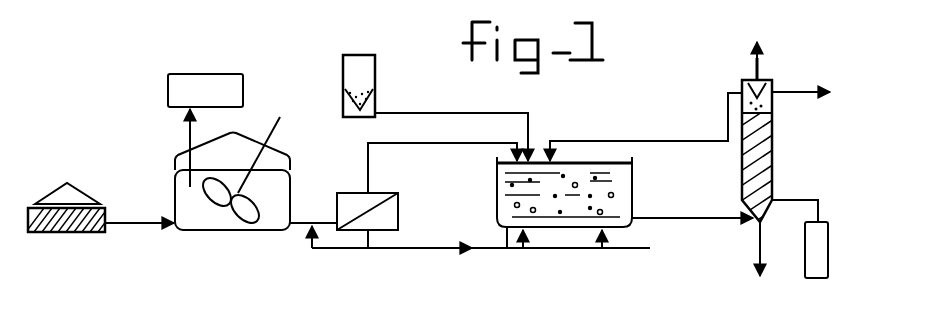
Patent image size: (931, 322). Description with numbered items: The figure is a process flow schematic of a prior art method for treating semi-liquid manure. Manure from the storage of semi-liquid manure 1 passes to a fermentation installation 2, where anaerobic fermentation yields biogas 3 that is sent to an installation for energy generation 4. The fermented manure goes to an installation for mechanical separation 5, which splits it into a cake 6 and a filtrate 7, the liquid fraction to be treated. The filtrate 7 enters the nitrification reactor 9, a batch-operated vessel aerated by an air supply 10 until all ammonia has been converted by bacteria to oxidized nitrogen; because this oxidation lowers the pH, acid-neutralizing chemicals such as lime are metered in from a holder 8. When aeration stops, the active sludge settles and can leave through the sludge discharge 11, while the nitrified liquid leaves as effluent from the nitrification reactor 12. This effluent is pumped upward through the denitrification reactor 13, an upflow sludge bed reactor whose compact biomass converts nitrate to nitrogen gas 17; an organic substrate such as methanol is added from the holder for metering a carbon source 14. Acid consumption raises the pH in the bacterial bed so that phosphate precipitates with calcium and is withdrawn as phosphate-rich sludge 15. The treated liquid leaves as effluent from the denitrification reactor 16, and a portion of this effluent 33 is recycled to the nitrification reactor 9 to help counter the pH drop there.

The storage of semi-liquid manure 1 is at (78, 224).
The fermentation installation 2 is at (227, 218).
The biogas 3 is at (187, 135).
The installation for energy generation 4 is at (192, 90).
The installation for mechanical separation 5 is at (352, 205).
The cake 6 is at (368, 250).
The filtrate 7 is at (455, 143).
The holder for metering acid-neutralizing chemicals 8 is at (352, 63).
The nitrification reactor 9 is at (500, 195).
The air supply 10 is at (575, 249).
The sludge discharge 11 is at (442, 250).
The effluent from the nitrification reactor 12 is at (702, 217).
The denitrification reactor 13 is at (772, 132).
The holder for metering C source 14 is at (808, 200).
The phosphate-rich sludge 15 is at (758, 242).
The effluent from the denitrification reactor 16 is at (808, 92).
The nitrogen gas 17 is at (752, 60).
The effluent recycled to the nitrification reactor 33 is at (697, 141).